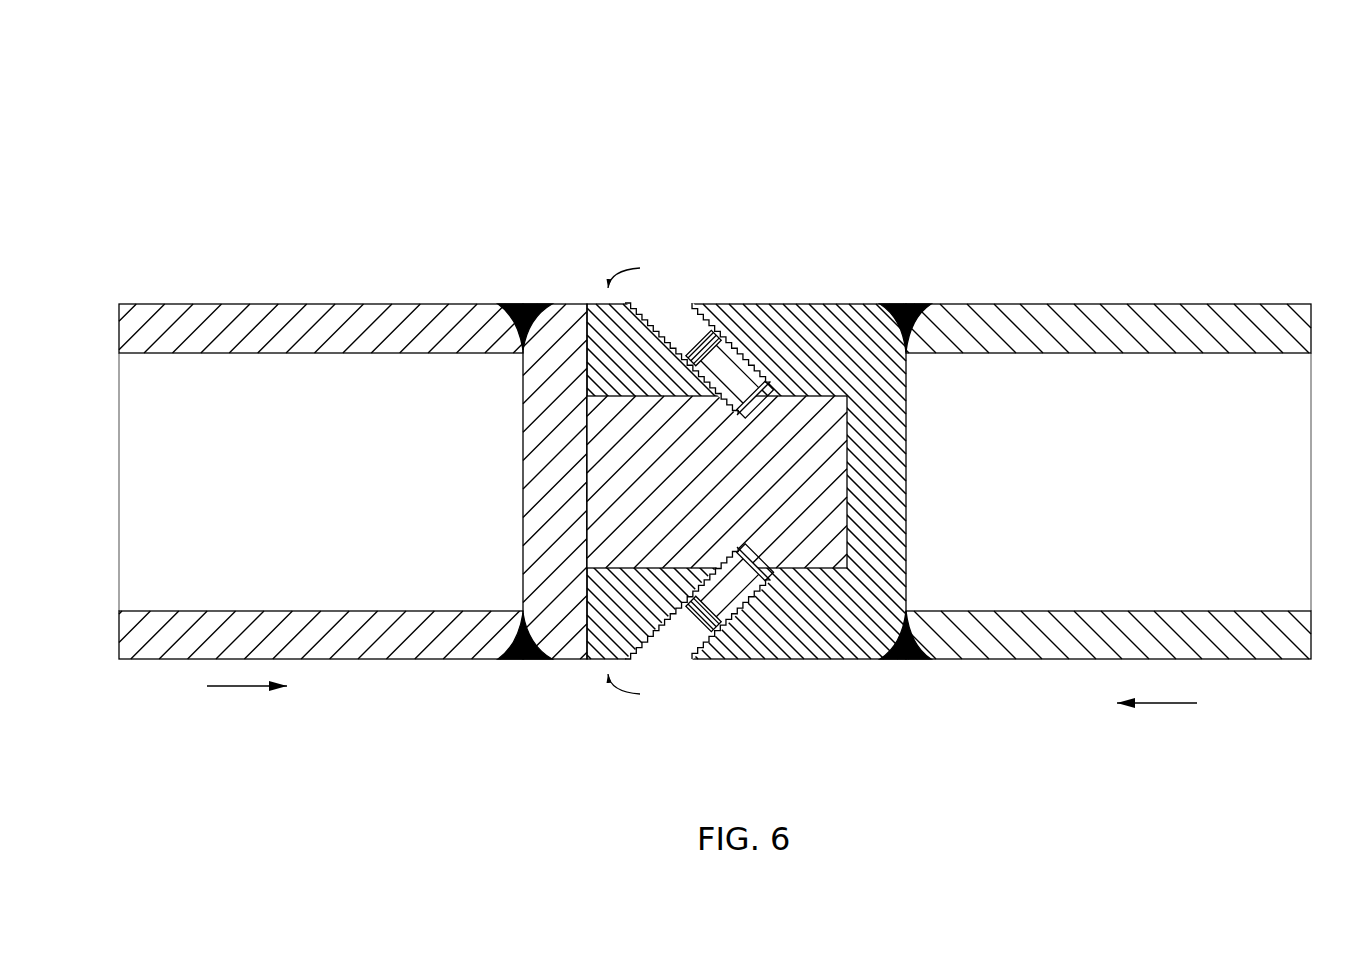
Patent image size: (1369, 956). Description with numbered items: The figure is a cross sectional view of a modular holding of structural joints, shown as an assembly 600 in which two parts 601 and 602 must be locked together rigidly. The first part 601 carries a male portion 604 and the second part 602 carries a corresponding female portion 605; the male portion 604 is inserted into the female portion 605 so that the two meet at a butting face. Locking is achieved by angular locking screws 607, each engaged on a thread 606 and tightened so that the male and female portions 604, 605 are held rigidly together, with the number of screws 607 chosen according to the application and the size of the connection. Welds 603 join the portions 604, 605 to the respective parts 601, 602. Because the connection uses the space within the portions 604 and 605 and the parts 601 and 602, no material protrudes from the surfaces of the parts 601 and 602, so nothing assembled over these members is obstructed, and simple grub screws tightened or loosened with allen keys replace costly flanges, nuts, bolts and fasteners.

The pipe joint assembly 600 is at (356, 79).
The first part 601 is at (321, 442).
The second part 602 is at (1122, 449).
The weld 603 is at (712, 455).
The male portion 604 is at (618, 432).
The female portion 605 is at (802, 437).
The thread 606 is at (692, 482).
The angular locking screw 607 is at (759, 482).